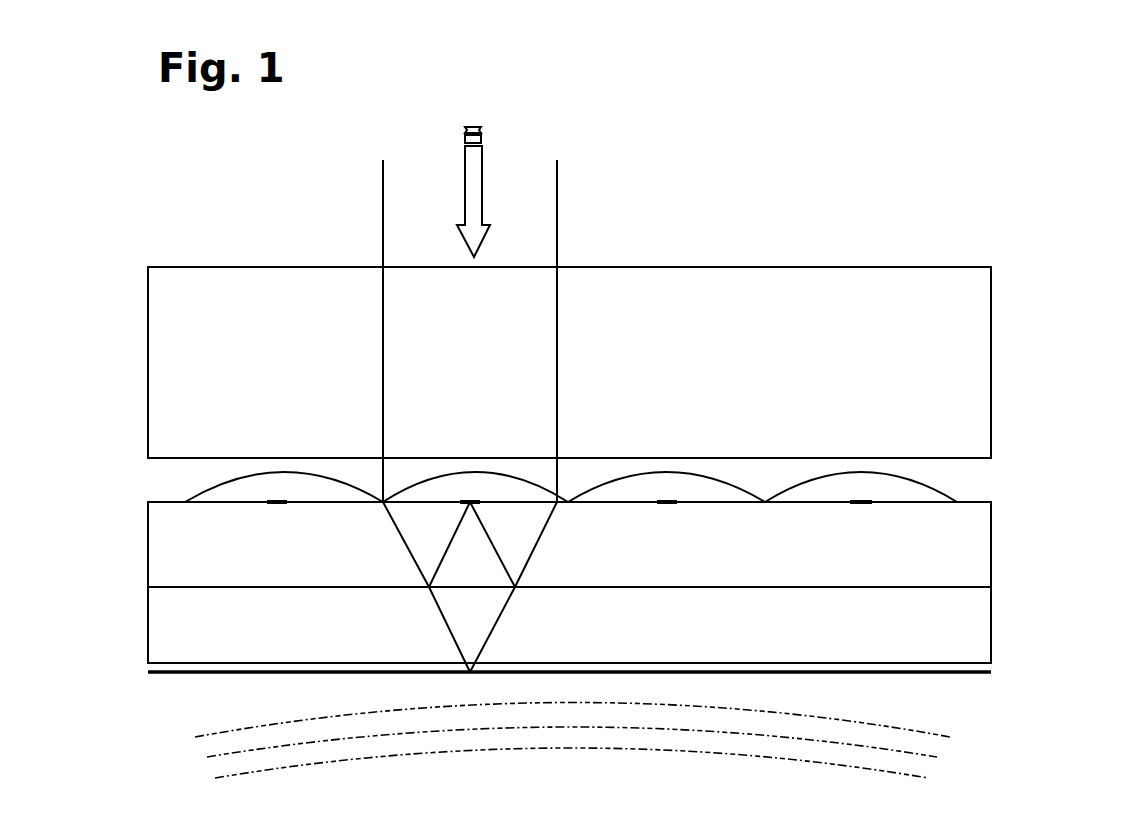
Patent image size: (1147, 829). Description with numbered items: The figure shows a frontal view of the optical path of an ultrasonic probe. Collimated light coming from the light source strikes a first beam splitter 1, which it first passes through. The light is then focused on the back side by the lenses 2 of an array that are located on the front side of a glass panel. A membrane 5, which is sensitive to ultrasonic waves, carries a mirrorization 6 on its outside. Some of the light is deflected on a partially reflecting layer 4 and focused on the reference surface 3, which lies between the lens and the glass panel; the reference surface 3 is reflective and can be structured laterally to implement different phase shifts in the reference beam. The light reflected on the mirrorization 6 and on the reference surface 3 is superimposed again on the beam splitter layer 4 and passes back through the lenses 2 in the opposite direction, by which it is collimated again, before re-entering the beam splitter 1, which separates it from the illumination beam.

The first beam splitter 1 is at (1000, 370).
The lenses of the array 2 is at (960, 479).
The reference surface 3 is at (898, 505).
The partially reflecting layer 4 is at (1004, 591).
The membrane 5 is at (1004, 669).
The mirrorization 6 is at (1007, 692).